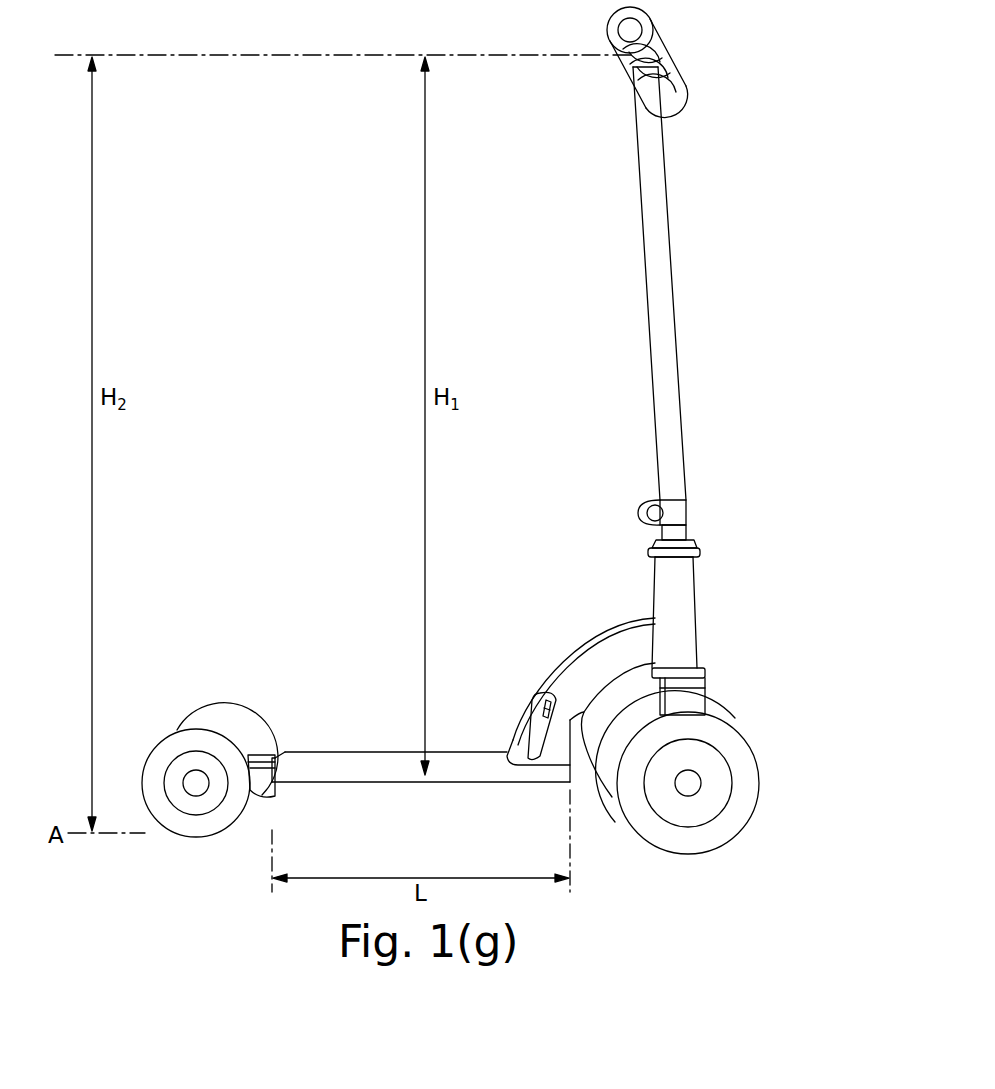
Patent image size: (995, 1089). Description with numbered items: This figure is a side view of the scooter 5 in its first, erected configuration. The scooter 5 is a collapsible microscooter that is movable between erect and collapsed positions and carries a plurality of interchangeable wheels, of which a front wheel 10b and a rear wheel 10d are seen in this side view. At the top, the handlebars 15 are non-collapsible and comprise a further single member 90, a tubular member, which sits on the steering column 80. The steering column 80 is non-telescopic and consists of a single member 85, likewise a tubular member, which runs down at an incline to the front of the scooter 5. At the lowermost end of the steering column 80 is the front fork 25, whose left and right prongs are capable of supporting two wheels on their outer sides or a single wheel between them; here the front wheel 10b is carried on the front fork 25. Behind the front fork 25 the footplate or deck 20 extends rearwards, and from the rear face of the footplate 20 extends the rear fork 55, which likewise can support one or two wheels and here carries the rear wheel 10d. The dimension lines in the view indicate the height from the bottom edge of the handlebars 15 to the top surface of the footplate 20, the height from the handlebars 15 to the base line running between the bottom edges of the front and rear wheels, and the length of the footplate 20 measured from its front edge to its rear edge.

The scooter 5 is at (712, 370).
The handlebars 15 is at (652, 24).
The further single member 90 is at (668, 62).
The steering column 80 is at (660, 268).
The single member 85 is at (671, 237).
The front fork 25 is at (698, 692).
The footplate or deck 20 is at (456, 762).
The rear fork 55 is at (262, 762).
The rear wheel 10d is at (222, 820).
The front wheel 10b is at (745, 755).